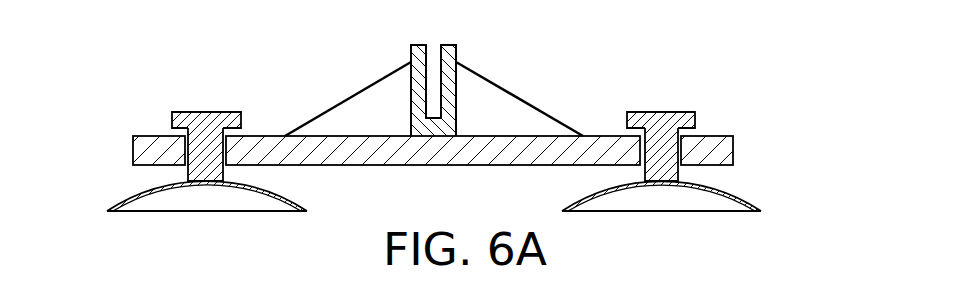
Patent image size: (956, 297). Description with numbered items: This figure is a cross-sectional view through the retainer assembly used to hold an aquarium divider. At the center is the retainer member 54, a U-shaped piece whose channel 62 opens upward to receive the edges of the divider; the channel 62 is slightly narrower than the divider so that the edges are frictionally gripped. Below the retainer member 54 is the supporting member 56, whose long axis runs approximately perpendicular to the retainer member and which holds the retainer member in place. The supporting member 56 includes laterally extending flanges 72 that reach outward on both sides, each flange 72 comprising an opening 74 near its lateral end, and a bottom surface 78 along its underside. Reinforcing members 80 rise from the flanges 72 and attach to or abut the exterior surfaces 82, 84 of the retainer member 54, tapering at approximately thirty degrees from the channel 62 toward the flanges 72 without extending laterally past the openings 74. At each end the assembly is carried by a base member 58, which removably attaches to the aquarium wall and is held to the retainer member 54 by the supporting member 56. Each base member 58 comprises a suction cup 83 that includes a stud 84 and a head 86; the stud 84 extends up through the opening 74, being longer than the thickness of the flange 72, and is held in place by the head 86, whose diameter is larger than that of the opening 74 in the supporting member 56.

The retainer member 54 is at (457, 100).
The supporting member 56 is at (758, 127).
The base member 58 is at (107, 218).
The channel 62 is at (437, 62).
The laterally extending flange 72 is at (133, 171).
The opening 74 is at (220, 138).
The bottom surface 78 is at (438, 167).
The reinforcing member 80 is at (355, 95).
The exterior surface 82 is at (411, 60).
The suction cup 83 is at (193, 211).
The exterior surface / stud 84 is at (456, 53).
The head 86 is at (187, 112).